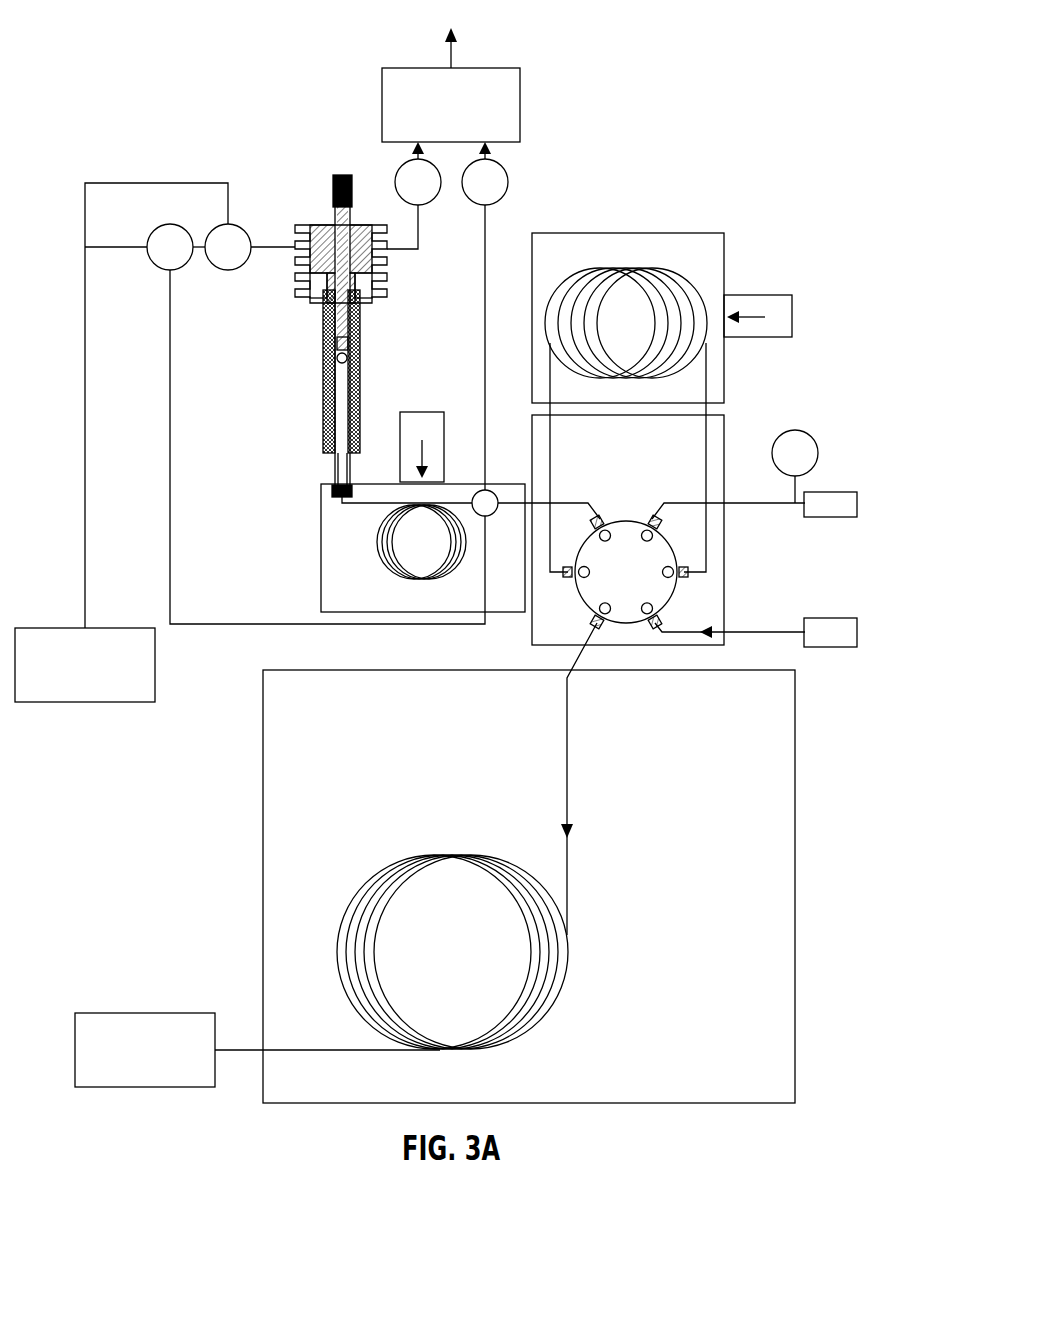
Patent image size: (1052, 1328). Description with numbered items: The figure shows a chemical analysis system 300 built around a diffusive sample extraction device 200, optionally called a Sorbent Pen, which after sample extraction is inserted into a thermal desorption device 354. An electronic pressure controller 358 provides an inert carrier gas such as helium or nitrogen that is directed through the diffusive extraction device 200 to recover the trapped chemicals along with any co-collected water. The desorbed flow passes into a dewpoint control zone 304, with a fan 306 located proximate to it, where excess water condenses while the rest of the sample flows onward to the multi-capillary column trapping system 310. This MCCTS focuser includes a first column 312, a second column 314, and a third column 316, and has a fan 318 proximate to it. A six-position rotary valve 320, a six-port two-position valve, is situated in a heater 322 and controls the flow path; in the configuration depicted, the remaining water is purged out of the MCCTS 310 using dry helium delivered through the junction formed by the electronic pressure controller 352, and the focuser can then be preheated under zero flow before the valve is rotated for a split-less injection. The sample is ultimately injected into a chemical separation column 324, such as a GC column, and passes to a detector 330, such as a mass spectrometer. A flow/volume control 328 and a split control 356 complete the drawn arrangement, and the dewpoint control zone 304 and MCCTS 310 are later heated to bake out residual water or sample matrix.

The chemical analysis system 300 is at (152, 36).
The diffusive sample extraction device 200 is at (336, 240).
The thermal desorption device 354 is at (387, 275).
The fan 306 is at (422, 412).
The electronic pressure controller (EPC) 352 is at (492, 485).
The dewpoint control zone 304 is at (297, 563).
The split control 356 is at (520, 105).
The multi-capillary column trapping system (MCCTS) 310 is at (626, 215).
The third column 316 is at (688, 290).
The second column 314 is at (668, 325).
The first column 312 is at (690, 320).
The fan 318 is at (792, 316).
The flow/volume control 328 is at (828, 492).
The heater 322 is at (650, 474).
The six-position rotary valve 320 is at (622, 623).
The electronic pressure controller (EPC) 358 is at (78, 628).
The detector 330 is at (147, 1013).
The chemical separation column 324 is at (548, 1005).